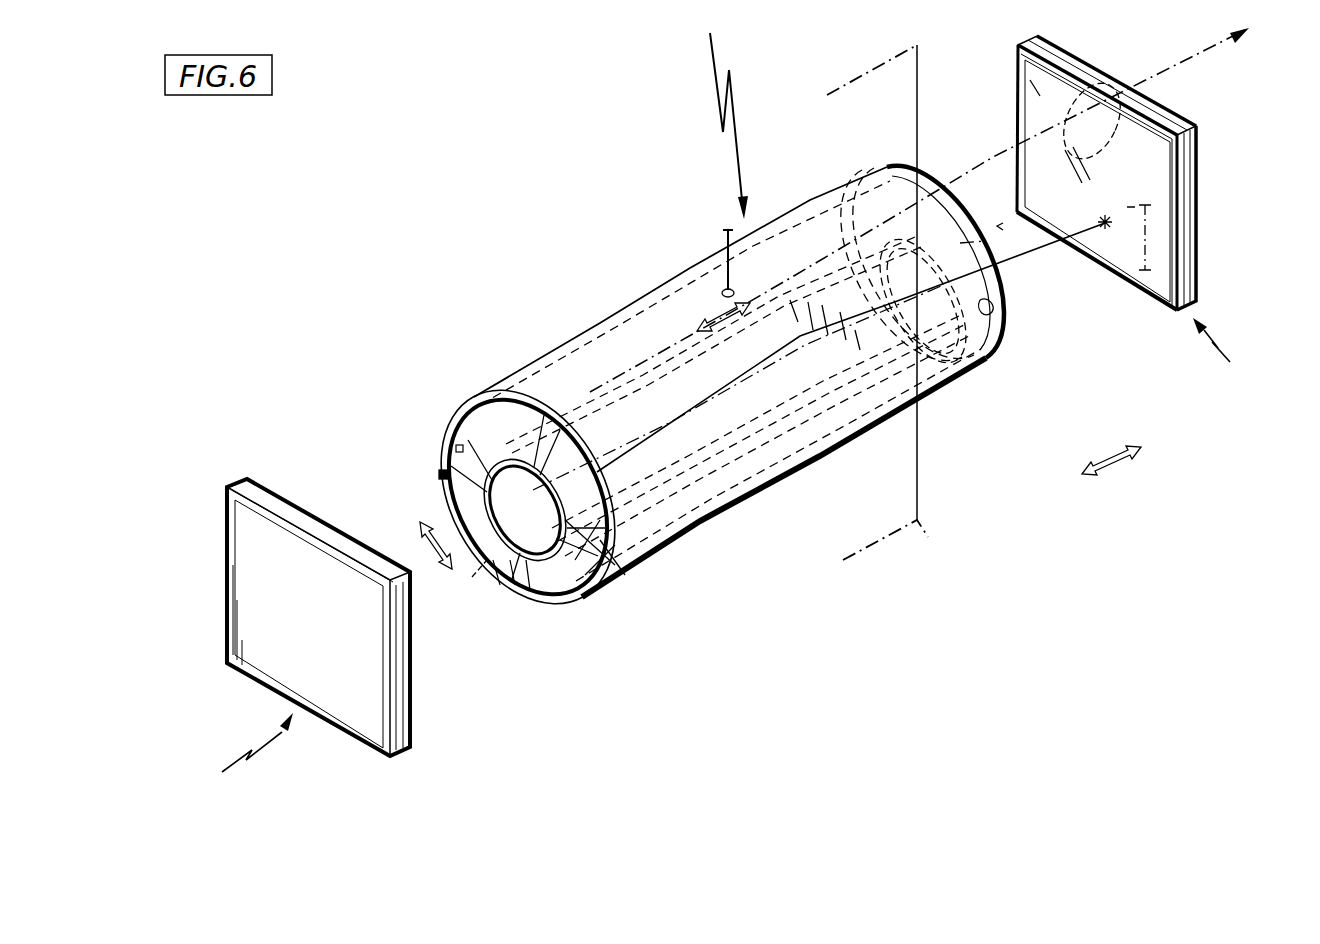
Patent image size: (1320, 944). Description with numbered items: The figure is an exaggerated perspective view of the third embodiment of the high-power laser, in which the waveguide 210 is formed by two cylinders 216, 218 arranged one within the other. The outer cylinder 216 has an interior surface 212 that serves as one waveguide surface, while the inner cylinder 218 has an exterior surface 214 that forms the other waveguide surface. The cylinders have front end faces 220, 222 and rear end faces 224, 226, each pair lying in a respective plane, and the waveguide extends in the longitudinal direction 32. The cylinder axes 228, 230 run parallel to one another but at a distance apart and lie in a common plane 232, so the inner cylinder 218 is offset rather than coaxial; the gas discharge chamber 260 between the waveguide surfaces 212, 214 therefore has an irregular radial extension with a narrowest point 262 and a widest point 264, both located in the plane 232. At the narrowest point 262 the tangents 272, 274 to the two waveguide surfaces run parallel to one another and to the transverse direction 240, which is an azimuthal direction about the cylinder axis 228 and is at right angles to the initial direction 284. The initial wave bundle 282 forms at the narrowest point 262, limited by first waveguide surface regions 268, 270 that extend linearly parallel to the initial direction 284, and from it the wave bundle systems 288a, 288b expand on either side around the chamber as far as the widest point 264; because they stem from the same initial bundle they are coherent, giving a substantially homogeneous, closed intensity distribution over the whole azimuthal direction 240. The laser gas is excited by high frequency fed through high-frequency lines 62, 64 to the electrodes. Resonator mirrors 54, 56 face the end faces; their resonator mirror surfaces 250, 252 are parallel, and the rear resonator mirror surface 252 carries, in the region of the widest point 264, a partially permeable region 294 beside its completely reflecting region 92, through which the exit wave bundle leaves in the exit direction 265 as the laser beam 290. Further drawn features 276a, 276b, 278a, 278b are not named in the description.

The longitudinal direction 32 is at (1120, 477).
The resonator mirror 54 is at (241, 751).
The resonator mirror 56 is at (1231, 360).
The high-frequency line 62 is at (1100, 222).
The high-frequency line 64 is at (720, 242).
The completely reflecting region 92 is at (1155, 170).
The waveguide 210 is at (723, 114).
The interior surface 212 is at (980, 240).
The exterior surface 214 is at (960, 300).
The cylinder 216 is at (888, 165).
The cylinder 218 is at (847, 183).
The front end face 220 is at (495, 400).
The front end face 222 is at (482, 410).
The rear end face 224 is at (940, 183).
The rear end face 226 is at (965, 227).
The cylinder axis 228 is at (1003, 223).
The cylinder axis 230 is at (960, 243).
The plane 232 is at (917, 520).
The transverse direction 240 is at (422, 552).
The resonator mirror surface 250 is at (413, 723).
The rear resonator mirror surface 252 is at (1157, 233).
The gas discharge chamber 260 is at (440, 474).
The narrowest point 262 is at (552, 560).
The widest point 264 is at (520, 437).
The exit direction 265 is at (710, 312).
The first waveguide surface region 268 is at (510, 560).
The first waveguide surface region 270 is at (493, 560).
The tangent 272 is at (607, 625).
The tangent 274 is at (630, 622).
The spoke 276a is at (590, 560).
The spoke 276b is at (453, 463).
The spoke 278a is at (620, 565).
The spoke 278b is at (457, 463).
The initial wave bundle 282 is at (522, 440).
The initial direction 284 is at (472, 577).
The wave bundle system 288a is at (690, 545).
The wave bundle system 288b is at (462, 450).
The laser beam 290 is at (1158, 77).
The partially permeable region 294 is at (1135, 158).